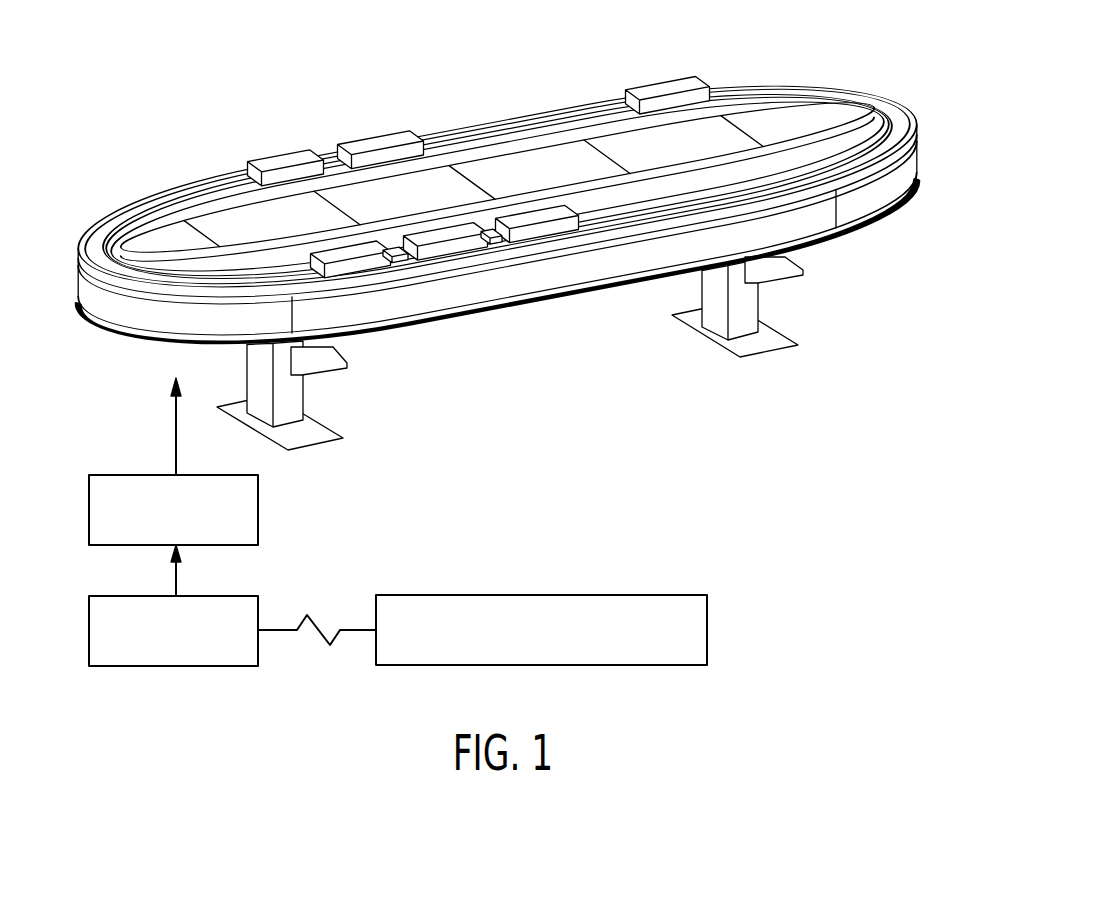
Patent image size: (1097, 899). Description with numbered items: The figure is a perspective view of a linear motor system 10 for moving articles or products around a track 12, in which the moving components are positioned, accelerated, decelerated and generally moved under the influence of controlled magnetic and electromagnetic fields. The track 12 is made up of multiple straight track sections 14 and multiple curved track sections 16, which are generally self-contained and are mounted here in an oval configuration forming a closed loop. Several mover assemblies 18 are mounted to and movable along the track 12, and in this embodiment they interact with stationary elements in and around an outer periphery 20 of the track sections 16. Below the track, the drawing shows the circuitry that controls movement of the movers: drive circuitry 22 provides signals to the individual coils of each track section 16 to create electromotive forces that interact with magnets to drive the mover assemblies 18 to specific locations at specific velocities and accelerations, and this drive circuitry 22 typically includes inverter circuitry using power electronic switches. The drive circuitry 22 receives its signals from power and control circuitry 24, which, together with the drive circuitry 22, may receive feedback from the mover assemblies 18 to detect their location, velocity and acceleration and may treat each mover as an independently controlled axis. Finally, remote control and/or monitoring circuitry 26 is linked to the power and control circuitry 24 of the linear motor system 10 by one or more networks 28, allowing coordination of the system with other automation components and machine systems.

The linear motor system 10 is at (498, 233).
The track 12 is at (228, 315).
The straight track sections 14 is at (375, 302).
The curved track sections 16 is at (177, 327).
The mover assemblies 18 is at (278, 157).
The outer periphery 20 is at (336, 318).
The drive circuitry 22 is at (258, 505).
The power and control circuitry 24 is at (258, 610).
The remote control and/or monitoring circuitry 26 is at (707, 632).
The networks 28 is at (358, 630).